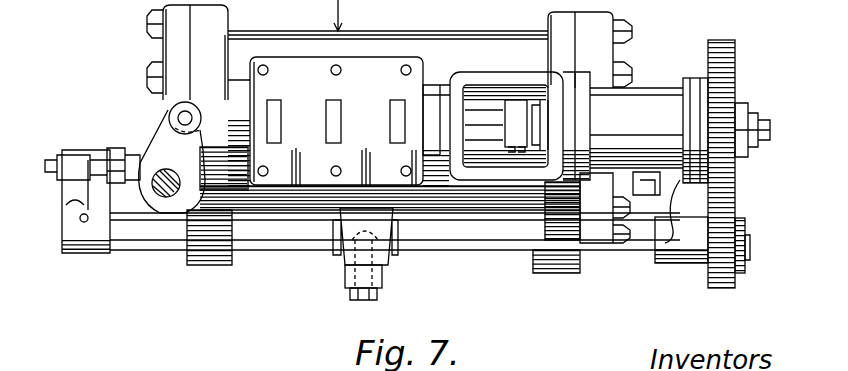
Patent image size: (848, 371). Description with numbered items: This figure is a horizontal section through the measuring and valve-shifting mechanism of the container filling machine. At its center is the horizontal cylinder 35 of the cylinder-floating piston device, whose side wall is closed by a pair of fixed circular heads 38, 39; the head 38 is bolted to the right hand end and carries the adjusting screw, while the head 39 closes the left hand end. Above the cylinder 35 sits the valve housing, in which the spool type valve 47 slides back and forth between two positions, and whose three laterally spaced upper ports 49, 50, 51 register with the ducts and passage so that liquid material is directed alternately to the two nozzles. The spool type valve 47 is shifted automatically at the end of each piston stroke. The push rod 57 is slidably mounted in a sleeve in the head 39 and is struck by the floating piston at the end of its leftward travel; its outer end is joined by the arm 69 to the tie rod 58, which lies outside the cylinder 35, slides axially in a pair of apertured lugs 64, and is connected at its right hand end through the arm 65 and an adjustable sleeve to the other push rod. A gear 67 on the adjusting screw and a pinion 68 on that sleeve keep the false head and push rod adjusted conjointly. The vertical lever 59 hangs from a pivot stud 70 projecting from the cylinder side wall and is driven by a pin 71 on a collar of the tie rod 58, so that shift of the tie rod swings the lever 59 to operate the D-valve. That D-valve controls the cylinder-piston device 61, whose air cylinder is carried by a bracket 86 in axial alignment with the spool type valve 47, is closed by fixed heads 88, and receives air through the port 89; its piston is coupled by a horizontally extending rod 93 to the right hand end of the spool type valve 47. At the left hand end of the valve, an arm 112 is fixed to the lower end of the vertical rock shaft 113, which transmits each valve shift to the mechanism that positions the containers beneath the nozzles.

The cylinder 35 is at (259, 32).
The fixed circular head 38 is at (603, 57).
The fixed circular head 39 is at (175, 47).
The spool type valve 47 is at (197, 101).
The upper port 49 is at (400, 98).
The upper port 50 is at (338, 98).
The upper port 51 is at (275, 97).
The push rod 57 is at (50, 160).
The tie rod 58 is at (160, 245).
The lever 59 is at (342, 275).
The cylinder-piston device 61 is at (617, 120).
The apertured lug 64 is at (207, 262).
The arm 65 is at (685, 275).
The gear 67 is at (735, 62).
The pinion 68 is at (720, 285).
The arm 69 is at (71, 201).
The pivot stud 70 is at (352, 300).
The pin 71 is at (378, 288).
The bracket 86 is at (490, 75).
The fixed head 88 is at (703, 78).
The port 89 is at (665, 85).
The horizontally extending rod 93 is at (483, 137).
The arm 112 is at (155, 140).
The rock shaft 113 is at (162, 195).